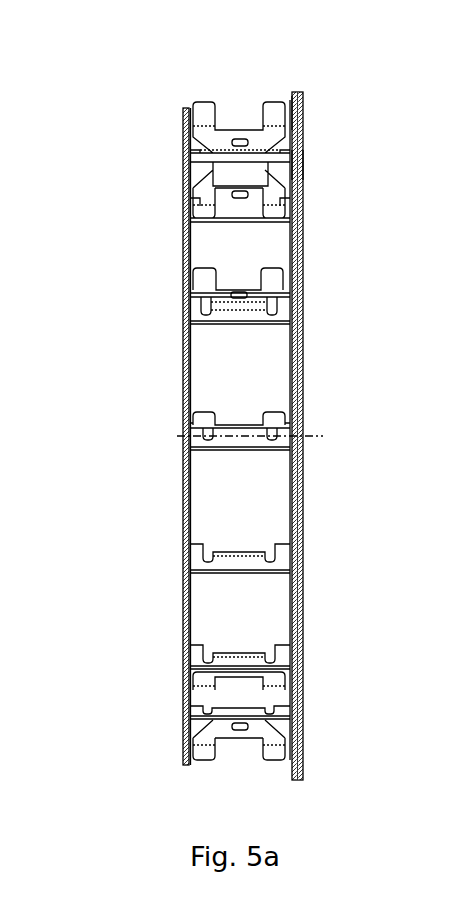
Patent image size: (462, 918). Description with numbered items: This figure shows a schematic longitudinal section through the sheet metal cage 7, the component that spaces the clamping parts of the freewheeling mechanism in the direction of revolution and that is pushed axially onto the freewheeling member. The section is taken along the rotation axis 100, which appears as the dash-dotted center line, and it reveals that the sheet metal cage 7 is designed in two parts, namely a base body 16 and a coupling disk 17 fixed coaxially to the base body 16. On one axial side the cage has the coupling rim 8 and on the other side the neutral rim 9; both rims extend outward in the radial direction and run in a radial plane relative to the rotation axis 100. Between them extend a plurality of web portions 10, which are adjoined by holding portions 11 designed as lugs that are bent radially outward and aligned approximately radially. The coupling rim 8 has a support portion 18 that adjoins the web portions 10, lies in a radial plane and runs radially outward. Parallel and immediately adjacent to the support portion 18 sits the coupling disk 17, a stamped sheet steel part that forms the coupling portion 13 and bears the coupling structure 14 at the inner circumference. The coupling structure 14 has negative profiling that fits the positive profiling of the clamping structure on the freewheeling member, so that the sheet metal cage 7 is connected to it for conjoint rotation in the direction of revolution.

The sheet metal cage 7 is at (145, 358).
The coupling rim 8 is at (303, 92).
The neutral rim 9 is at (183, 117).
The web portions 10 is at (250, 221).
The holding portions 11 is at (205, 104).
The coupling portion 13 is at (362, 171).
The coupling structure 14 is at (362, 171).
The base body 16 is at (182, 457).
The coupling disk 17 is at (300, 163).
The support portion 18 is at (290, 98).
The rotation axis 100 is at (298, 435).